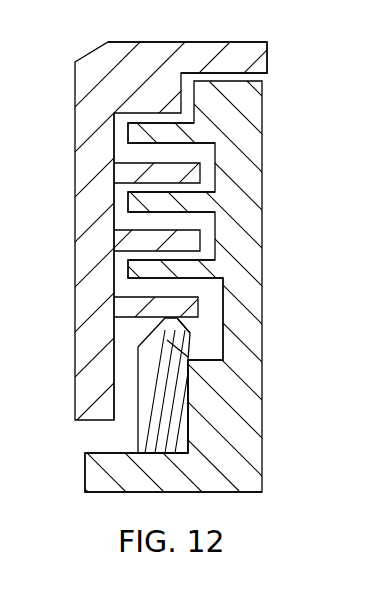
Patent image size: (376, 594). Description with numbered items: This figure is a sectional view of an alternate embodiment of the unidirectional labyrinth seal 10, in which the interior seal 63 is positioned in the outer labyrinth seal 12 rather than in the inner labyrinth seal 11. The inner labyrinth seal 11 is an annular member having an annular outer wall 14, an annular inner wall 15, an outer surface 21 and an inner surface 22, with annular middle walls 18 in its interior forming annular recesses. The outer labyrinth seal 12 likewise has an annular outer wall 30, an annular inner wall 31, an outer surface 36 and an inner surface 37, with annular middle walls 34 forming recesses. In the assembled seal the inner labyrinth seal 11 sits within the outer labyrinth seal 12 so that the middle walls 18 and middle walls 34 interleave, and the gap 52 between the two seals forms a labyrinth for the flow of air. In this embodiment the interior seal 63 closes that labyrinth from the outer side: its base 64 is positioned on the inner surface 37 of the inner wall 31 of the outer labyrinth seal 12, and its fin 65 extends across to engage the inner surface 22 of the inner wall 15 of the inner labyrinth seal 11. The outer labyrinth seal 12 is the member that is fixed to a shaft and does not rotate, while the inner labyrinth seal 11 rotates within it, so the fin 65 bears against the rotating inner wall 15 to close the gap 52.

The unidirectional labyrinth seal 10 is at (188, 250).
The inner labyrinth seal 11 is at (188, 214).
The outer labyrinth seal 12 is at (188, 286).
The outer wall 14 is at (230, 57).
The inner wall 15 is at (136, 298).
The middle walls 18 is at (150, 175).
The outer surface 21 is at (73, 216).
The inner surface 22 is at (110, 271).
The outer wall 30 is at (172, 130).
The inner wall 31 is at (225, 470).
The middle walls 34 is at (162, 200).
The outer surface 36 is at (270, 167).
The inner surface 37 is at (158, 458).
The gap 52 is at (186, 292).
The interior seal 63 is at (166, 385).
The base 64 is at (175, 428).
The fin 65 is at (195, 340).